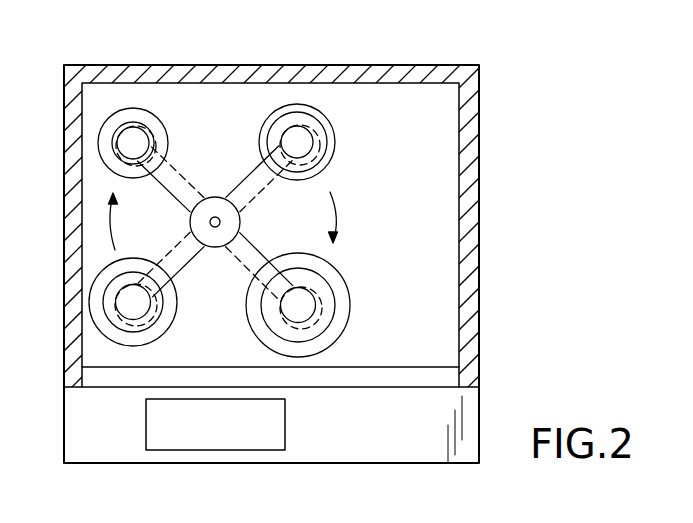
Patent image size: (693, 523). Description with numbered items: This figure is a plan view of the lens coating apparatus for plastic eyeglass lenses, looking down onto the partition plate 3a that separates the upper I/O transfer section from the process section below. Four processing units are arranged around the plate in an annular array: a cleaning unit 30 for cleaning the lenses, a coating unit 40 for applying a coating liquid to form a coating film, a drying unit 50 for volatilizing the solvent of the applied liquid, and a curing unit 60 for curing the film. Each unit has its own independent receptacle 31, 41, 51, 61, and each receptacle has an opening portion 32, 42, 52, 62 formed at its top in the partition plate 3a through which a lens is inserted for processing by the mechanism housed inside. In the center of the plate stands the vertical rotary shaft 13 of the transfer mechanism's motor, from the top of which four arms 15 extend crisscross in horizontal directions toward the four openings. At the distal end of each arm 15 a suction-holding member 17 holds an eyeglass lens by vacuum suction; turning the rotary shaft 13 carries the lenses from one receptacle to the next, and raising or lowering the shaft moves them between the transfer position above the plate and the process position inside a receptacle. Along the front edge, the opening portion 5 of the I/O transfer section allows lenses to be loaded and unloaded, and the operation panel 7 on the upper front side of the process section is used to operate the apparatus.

The partition plate 3a is at (118, 100).
The opening portion 5 is at (385, 378).
The operation panel 7 is at (76, 422).
The rotary shaft 13 is at (212, 215).
The arms 15 is at (255, 203).
The suction-holding member 17 is at (157, 150).
The cleaning unit 30 is at (118, 284).
The receptacle 31 is at (178, 306).
The opening portion 32 is at (100, 300).
The coating unit 40 is at (110, 101).
The receptacle 41 is at (152, 128).
The opening portion 42 is at (158, 121).
The drying unit 50 is at (328, 102).
The receptacle 51 is at (336, 140).
The opening portion 52 is at (327, 121).
The curing unit 60 is at (336, 288).
The receptacle 61 is at (350, 287).
The opening portion 62 is at (343, 305).